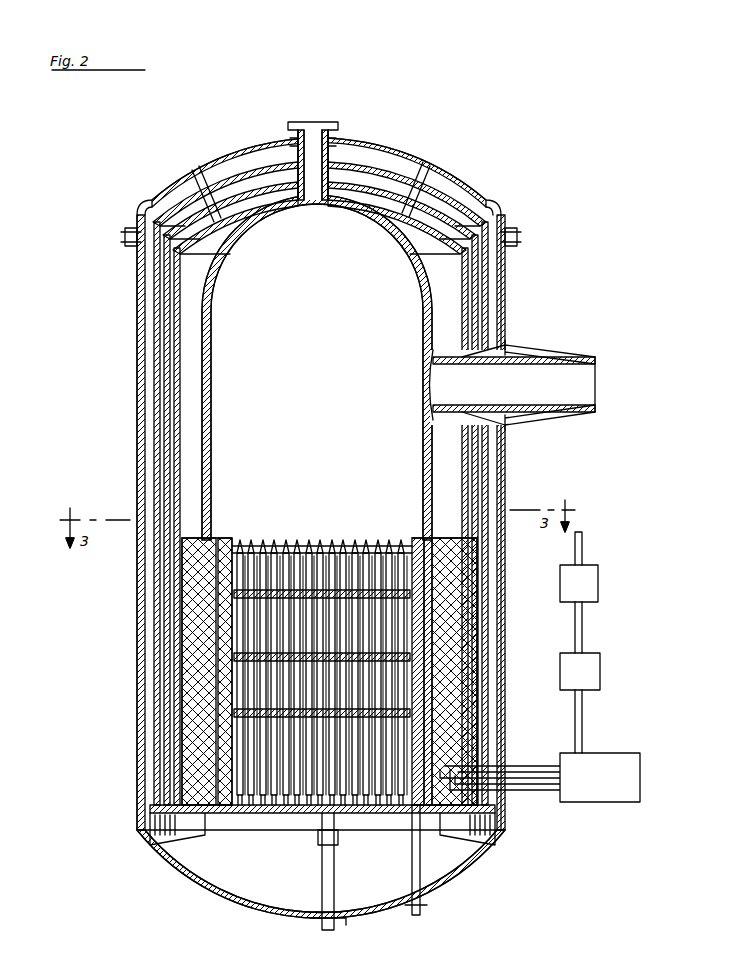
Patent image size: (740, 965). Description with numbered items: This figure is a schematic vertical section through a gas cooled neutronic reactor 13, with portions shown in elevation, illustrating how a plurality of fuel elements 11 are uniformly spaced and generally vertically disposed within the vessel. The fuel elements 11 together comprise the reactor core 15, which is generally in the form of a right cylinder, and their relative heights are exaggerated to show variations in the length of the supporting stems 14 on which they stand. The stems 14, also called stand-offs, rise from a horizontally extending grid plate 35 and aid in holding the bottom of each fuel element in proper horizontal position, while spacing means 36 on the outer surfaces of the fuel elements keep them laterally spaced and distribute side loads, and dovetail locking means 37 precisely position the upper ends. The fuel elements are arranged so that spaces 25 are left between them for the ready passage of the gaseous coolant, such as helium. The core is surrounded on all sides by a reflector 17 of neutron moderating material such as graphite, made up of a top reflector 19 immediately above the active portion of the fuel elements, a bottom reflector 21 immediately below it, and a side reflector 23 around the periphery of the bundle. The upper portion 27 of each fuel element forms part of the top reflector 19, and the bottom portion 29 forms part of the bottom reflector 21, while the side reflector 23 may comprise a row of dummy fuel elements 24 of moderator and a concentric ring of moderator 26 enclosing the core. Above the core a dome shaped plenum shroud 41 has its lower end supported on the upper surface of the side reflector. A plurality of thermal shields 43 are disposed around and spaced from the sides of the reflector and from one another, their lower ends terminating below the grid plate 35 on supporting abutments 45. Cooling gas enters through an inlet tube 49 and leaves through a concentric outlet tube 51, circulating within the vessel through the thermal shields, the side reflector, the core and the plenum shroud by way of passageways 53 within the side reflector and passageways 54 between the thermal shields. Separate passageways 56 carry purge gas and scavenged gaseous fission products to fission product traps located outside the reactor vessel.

The fuel elements 11 is at (292, 810).
The gas cooled neutronic reactor 13 is at (318, 343).
The stems 14 is at (230, 810).
The reactor core 15 is at (232, 668).
The reflector 17 is at (190, 616).
The top reflector 19 is at (270, 572).
The bottom reflector 21 is at (230, 768).
The side reflector 23 is at (195, 690).
The dummy fuel elements 24 is at (415, 632).
The spaces 25 is at (295, 650).
The concentric ring of moderator 26 is at (262, 583).
The upper portion 27 is at (395, 580).
The bottom portion 29 is at (395, 742).
The grid plate 35 is at (262, 813).
The spacing means 36 is at (250, 594).
The dovetail locking means 37 is at (320, 545).
The plenum shroud 41 is at (212, 425).
The thermal shields 43 is at (172, 330).
The supporting abutments 45 is at (150, 832).
The inlet tube 49 is at (560, 345).
The outlet tube 51 is at (580, 378).
The passageways within the side reflector 53 is at (400, 660).
The passageways between the thermal shields 54 is at (483, 525).
The passageways 56 is at (560, 790).